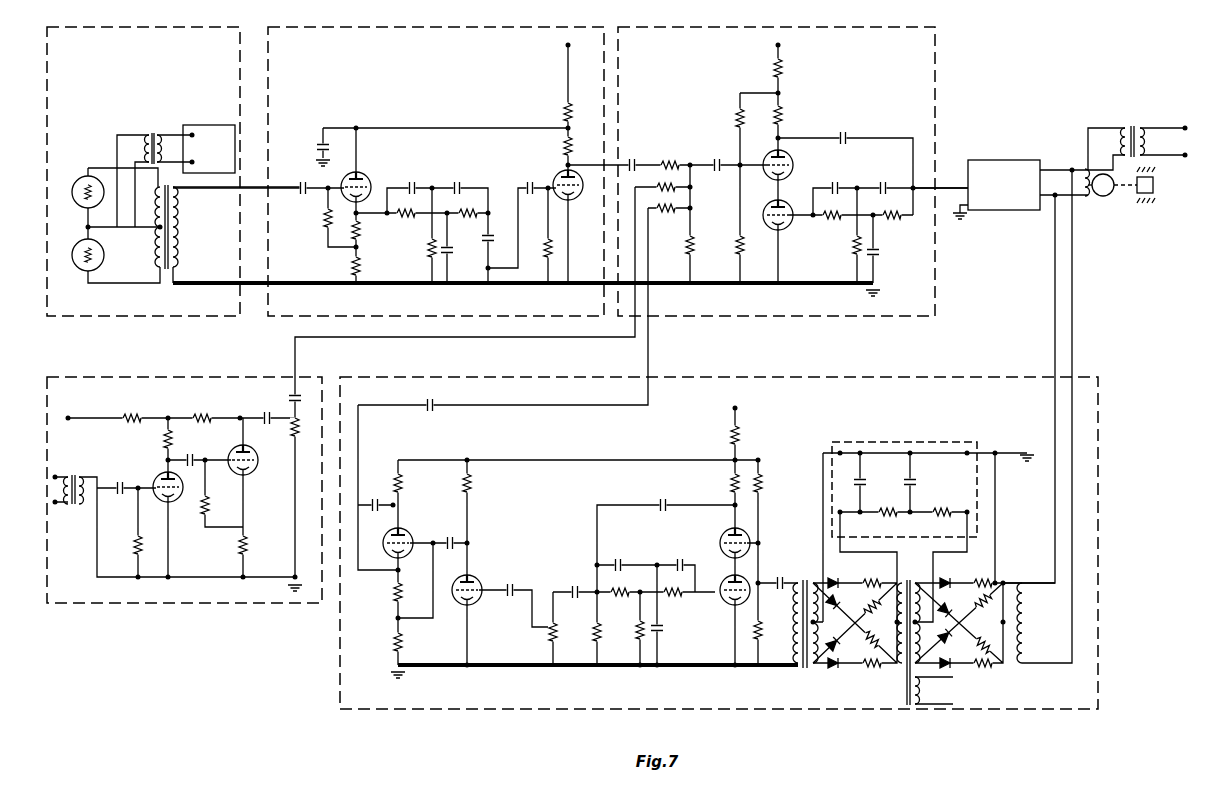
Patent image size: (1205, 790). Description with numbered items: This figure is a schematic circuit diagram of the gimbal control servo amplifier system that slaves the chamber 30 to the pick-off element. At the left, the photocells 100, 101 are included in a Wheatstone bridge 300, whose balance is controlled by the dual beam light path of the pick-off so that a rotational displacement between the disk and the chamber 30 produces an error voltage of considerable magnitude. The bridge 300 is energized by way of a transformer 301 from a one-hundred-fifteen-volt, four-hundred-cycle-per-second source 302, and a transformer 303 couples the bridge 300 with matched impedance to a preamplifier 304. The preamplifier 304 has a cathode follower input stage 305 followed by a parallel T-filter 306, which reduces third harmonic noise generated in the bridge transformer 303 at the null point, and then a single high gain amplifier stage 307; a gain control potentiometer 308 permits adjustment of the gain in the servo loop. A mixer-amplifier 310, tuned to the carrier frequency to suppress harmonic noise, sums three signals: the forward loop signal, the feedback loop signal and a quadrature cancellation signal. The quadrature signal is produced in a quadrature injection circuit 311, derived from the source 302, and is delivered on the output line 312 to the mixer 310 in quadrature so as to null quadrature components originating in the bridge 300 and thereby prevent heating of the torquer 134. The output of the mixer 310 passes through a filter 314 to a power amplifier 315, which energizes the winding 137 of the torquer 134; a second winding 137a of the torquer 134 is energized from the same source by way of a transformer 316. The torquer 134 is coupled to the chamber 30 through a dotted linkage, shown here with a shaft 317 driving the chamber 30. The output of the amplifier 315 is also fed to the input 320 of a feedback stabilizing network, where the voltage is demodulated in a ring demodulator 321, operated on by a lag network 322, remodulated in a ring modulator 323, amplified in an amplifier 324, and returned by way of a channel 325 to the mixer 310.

The chamber 30 is at (1153, 185).
The photocell 100 is at (78, 180).
The photocell 101 is at (104, 258).
The torquer 134 is at (1103, 196).
The winding 137 is at (1084, 171).
The winding 137a is at (1100, 161).
The Wheatstone bridge 300 is at (175, 171).
The transformer 301 is at (152, 135).
The source 302 is at (200, 125).
The transformer 303 is at (173, 279).
The preamplifier 304 is at (402, 171).
The cathode follower input stage 305 is at (364, 177).
The parallel T-filter 306 is at (442, 187).
The high gain amplifier stage 307 is at (554, 174).
The gain control potentiometer 308 is at (495, 268).
The mixer-amplifier 310 is at (793, 171).
The quadrature injection circuit 311 is at (160, 405).
The output line 312 is at (410, 337).
The filter 314 is at (875, 214).
The power amplifier 315 is at (1011, 210).
The transformer 316 is at (1133, 127).
The shaft 317 is at (1118, 190).
The input of feedback stabilizing network 320 is at (1035, 628).
The ring demodulator 321 is at (955, 573).
The lag network 322 is at (886, 467).
The ring modulator 323 is at (853, 573).
The amplifier 324 is at (719, 543).
The channel 325 is at (497, 405).